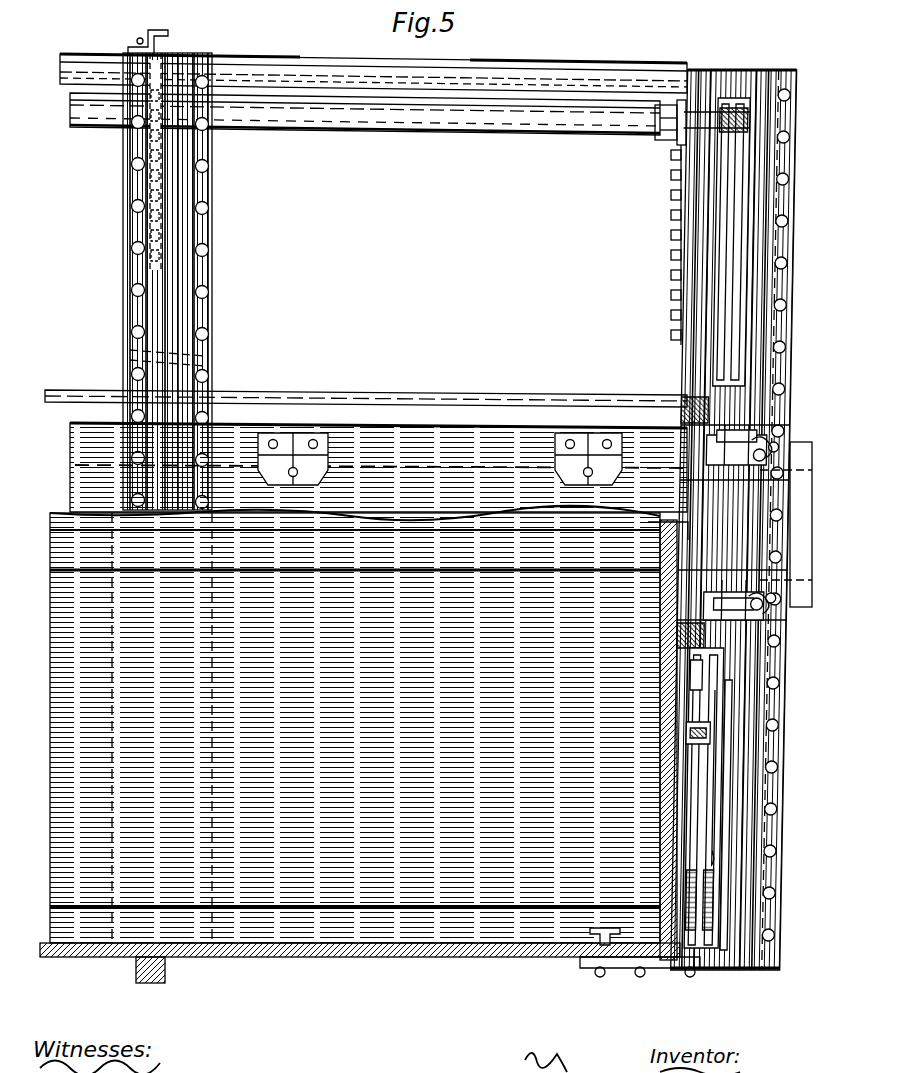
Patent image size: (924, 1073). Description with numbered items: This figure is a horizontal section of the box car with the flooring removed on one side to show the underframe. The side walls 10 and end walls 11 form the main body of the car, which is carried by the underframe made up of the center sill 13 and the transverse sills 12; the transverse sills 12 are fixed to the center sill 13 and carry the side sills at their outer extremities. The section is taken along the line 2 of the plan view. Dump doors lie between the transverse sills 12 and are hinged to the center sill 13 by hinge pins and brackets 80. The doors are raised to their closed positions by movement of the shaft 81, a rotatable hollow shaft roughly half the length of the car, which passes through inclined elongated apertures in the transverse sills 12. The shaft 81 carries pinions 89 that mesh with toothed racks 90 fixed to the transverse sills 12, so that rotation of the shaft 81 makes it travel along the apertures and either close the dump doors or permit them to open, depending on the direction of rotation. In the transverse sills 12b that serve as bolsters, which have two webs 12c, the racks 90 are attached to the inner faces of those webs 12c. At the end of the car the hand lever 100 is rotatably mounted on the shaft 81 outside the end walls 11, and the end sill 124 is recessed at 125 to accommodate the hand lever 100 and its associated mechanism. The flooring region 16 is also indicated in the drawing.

The section line 2 is at (176, 60).
The side walls 10 is at (306, 960).
The end walls 11 is at (660, 846).
The transverse sills 12 is at (205, 352).
The transverse sills performing the functions of bolsters 12b is at (200, 312).
The webs 12c is at (128, 350).
The center sills 13 is at (366, 451).
The door panel 16 is at (355, 725).
The brackets 80 is at (288, 446).
The shaft 81 is at (362, 118).
The pinions 89 is at (668, 107).
The toothed racks 90 is at (131, 212).
The hand lever 100 is at (742, 655).
The end sill 124 is at (732, 520).
The recess 125 is at (748, 765).